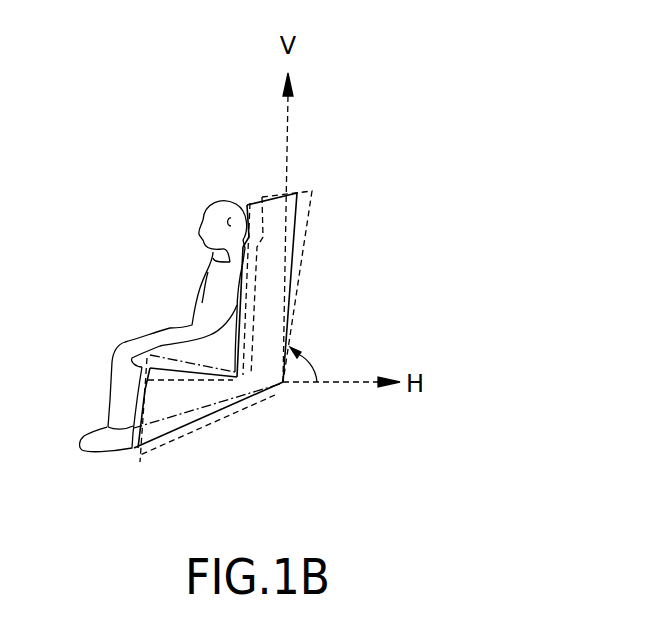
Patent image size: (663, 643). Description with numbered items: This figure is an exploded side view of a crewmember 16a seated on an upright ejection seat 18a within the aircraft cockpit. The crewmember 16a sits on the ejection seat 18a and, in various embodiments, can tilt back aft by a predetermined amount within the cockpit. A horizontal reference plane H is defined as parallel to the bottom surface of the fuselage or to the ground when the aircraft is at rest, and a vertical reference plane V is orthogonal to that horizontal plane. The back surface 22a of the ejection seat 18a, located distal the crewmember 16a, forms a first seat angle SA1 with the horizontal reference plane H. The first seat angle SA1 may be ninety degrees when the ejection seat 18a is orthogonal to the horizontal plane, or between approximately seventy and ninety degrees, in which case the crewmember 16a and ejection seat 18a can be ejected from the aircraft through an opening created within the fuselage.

The crewmember 16a is at (110, 387).
The ejection seat 18a is at (172, 430).
The back surface 22a is at (296, 222).
The first seat angle SA1 is at (323, 362).